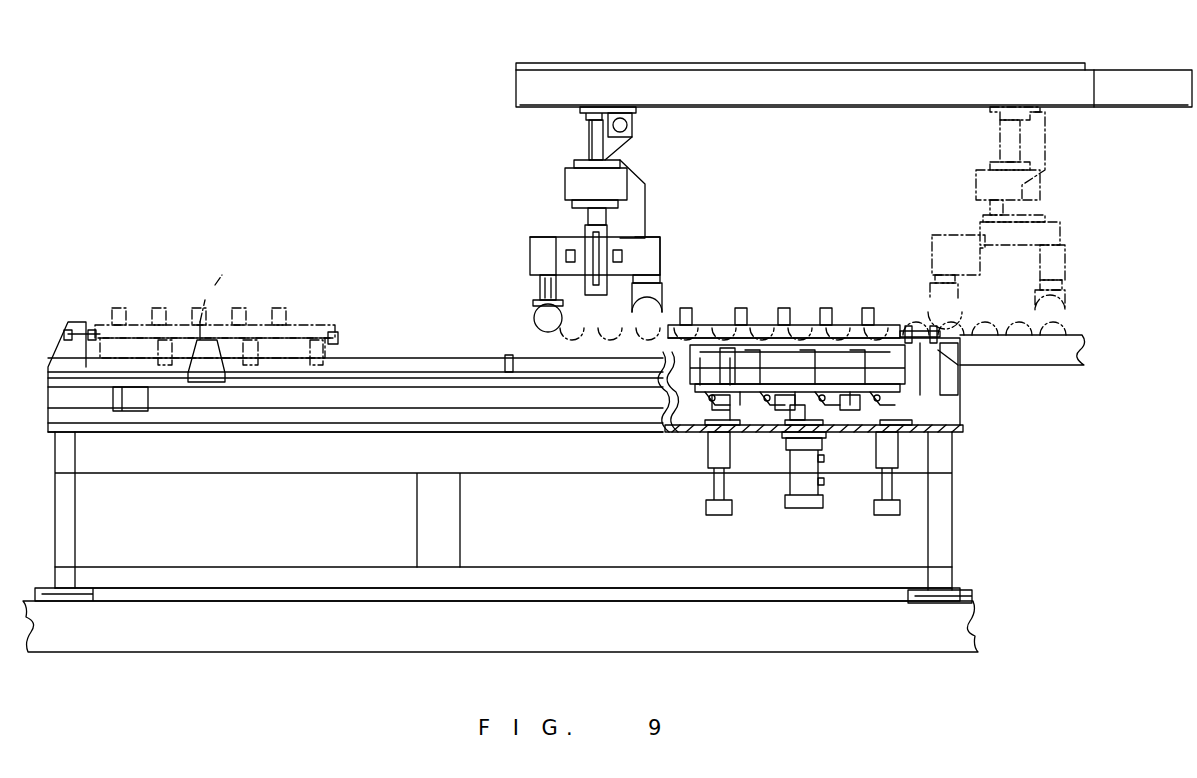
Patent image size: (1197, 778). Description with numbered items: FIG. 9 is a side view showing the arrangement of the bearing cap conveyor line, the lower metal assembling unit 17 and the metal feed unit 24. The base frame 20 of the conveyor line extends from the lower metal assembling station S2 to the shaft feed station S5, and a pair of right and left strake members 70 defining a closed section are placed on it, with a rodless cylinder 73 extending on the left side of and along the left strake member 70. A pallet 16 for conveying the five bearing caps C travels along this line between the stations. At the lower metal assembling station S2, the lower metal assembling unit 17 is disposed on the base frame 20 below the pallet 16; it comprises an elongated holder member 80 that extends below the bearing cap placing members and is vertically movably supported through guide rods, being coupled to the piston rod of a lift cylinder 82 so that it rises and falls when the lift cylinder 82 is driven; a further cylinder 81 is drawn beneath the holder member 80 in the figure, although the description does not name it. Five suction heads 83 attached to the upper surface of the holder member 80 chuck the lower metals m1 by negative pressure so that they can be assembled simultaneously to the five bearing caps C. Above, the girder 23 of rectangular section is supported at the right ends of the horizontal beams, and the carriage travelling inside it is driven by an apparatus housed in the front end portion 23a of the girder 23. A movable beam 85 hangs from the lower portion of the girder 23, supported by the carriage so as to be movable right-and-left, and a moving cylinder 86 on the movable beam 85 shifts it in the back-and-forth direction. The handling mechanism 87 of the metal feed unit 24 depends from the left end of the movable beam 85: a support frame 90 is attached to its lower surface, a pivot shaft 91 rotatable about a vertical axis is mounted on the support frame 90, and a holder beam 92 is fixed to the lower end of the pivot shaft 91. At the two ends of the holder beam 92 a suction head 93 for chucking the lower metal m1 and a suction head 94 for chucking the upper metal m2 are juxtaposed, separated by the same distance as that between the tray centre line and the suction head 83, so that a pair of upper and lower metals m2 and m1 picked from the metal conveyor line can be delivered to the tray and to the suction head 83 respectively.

The metal feed unit 24 is at (848, 61).
The girder 23 is at (853, 107).
The front end portion of the girder 23a is at (1154, 84).
The movable beam 85 is at (589, 142).
The moving cylinder 86 is at (636, 122).
The handling mechanism 87 is at (682, 224).
The support frame 90 is at (642, 194).
The pivot shaft 91 is at (588, 256).
The holder beam 92 is at (662, 262).
The suction head 93 is at (658, 293).
The suction head 94 is at (536, 316).
The pallet 16 is at (820, 308).
The lower metal assembling unit 17 is at (690, 446).
The base frame 20 is at (358, 478).
The strake member 70 is at (68, 432).
The rodless cylinder 73 is at (288, 432).
The holder member 80 is at (752, 370).
The cylinder 81 is at (804, 510).
The lift cylinder 82 is at (882, 482).
The suction head 83 is at (702, 362).
The lower metal m1 is at (1064, 328).
The upper metal m2 is at (844, 324).
The bearing cap C is at (211, 322).
The lower metal assembling station S2 is at (837, 207).
The shaft feed station S5 is at (273, 227).